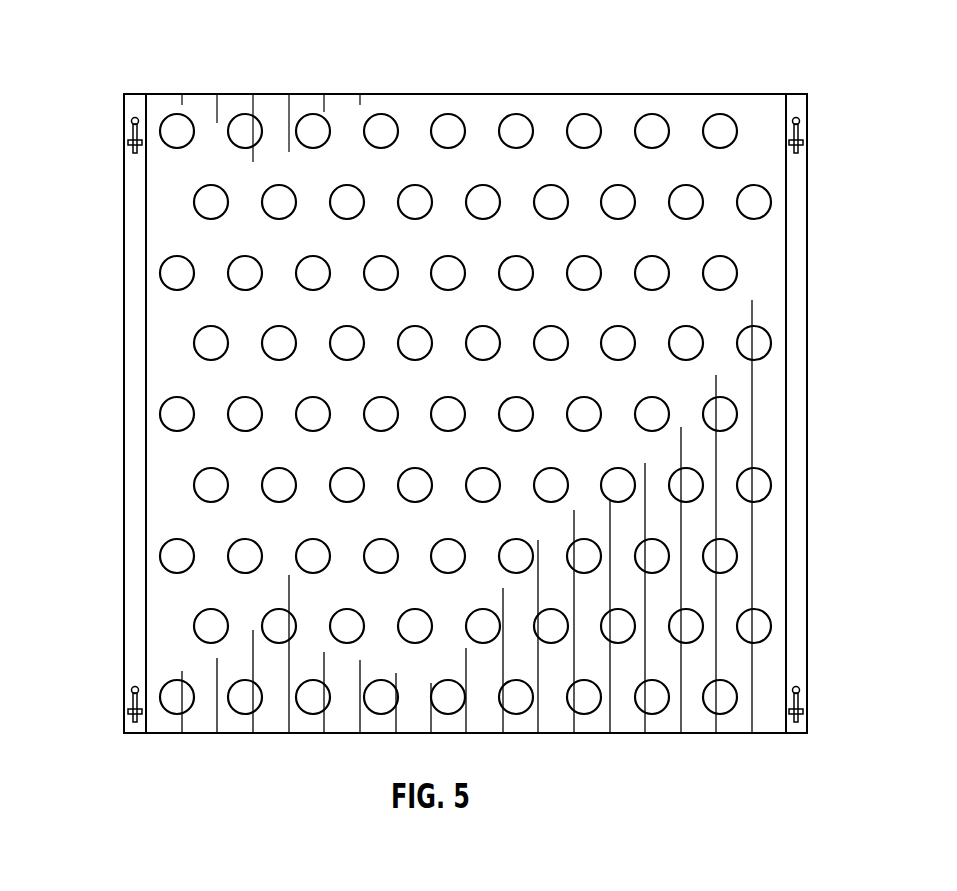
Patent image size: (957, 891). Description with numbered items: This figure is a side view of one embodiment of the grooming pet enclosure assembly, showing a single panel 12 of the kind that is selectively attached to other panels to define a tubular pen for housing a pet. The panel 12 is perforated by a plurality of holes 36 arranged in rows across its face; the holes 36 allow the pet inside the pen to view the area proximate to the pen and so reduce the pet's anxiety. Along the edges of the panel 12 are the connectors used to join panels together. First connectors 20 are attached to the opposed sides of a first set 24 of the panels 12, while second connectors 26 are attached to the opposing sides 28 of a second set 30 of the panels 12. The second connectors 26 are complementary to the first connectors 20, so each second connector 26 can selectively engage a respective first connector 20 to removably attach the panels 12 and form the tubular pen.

The panel 12 is at (182, 222).
The first connector 20 is at (136, 687).
The first set of the panels 24 is at (135, 503).
The second connector 26 is at (128, 142).
The opposing side 28 is at (145, 316).
The second set of the panels 30 is at (477, 155).
The hole 36 is at (273, 342).